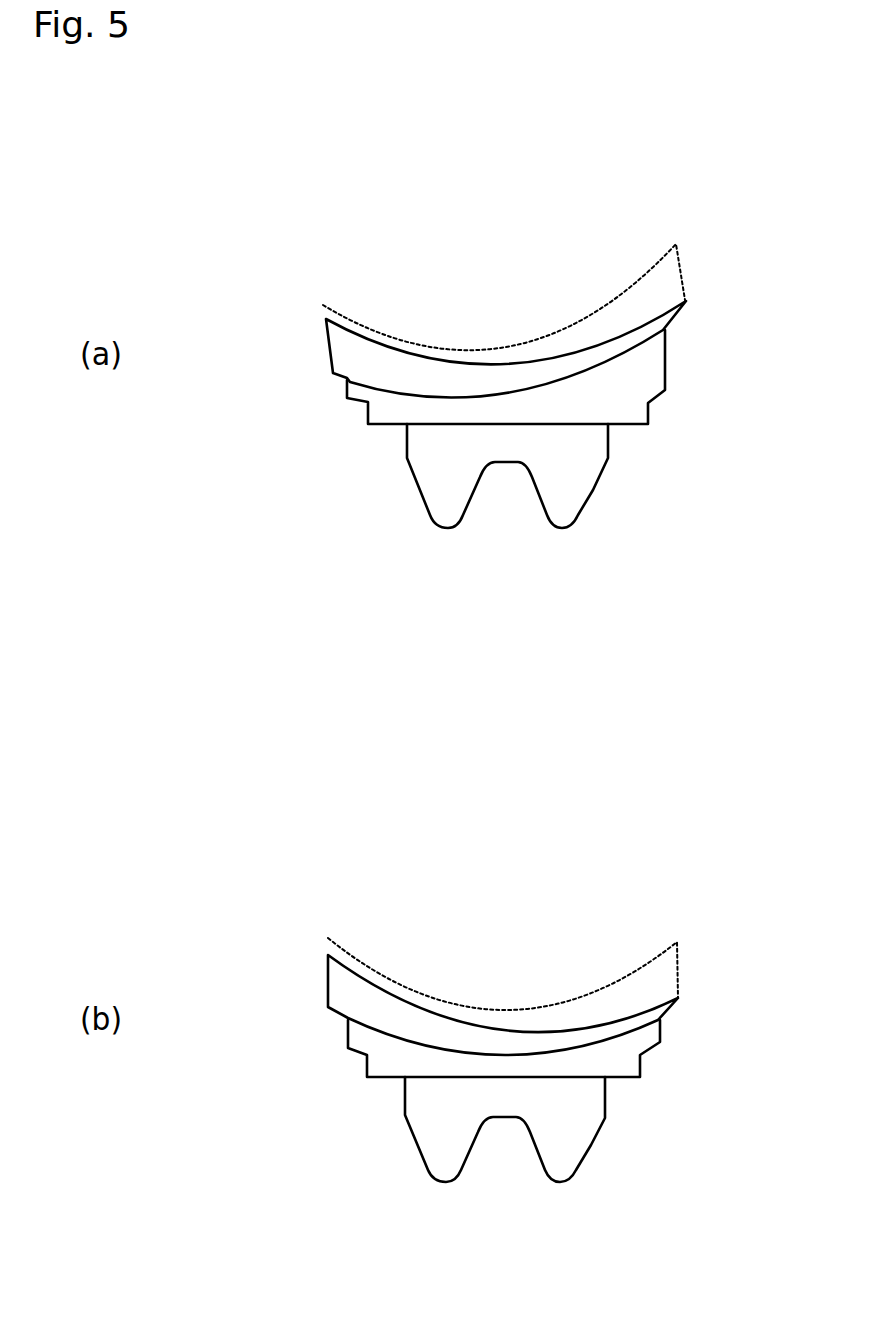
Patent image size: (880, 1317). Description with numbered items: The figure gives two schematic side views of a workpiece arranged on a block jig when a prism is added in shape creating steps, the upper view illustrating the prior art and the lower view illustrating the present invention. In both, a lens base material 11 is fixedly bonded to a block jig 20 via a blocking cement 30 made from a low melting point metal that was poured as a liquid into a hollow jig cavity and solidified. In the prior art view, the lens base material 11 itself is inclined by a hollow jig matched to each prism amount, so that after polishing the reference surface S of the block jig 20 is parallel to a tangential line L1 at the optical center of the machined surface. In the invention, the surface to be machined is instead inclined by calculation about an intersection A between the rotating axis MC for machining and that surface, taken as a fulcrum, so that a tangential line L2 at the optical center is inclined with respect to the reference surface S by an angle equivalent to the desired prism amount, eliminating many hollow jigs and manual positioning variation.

The lens base material 11 is at (328, 350).
The blocking cement 30 is at (366, 417).
The block jig 20 is at (596, 488).
The tangential line L1 is at (470, 365).
The tangential line L2 is at (503, 1030).
The reference surface S is at (648, 424).
The rotating axis for machining MC is at (506, 293).
The intersection A is at (503, 1030).